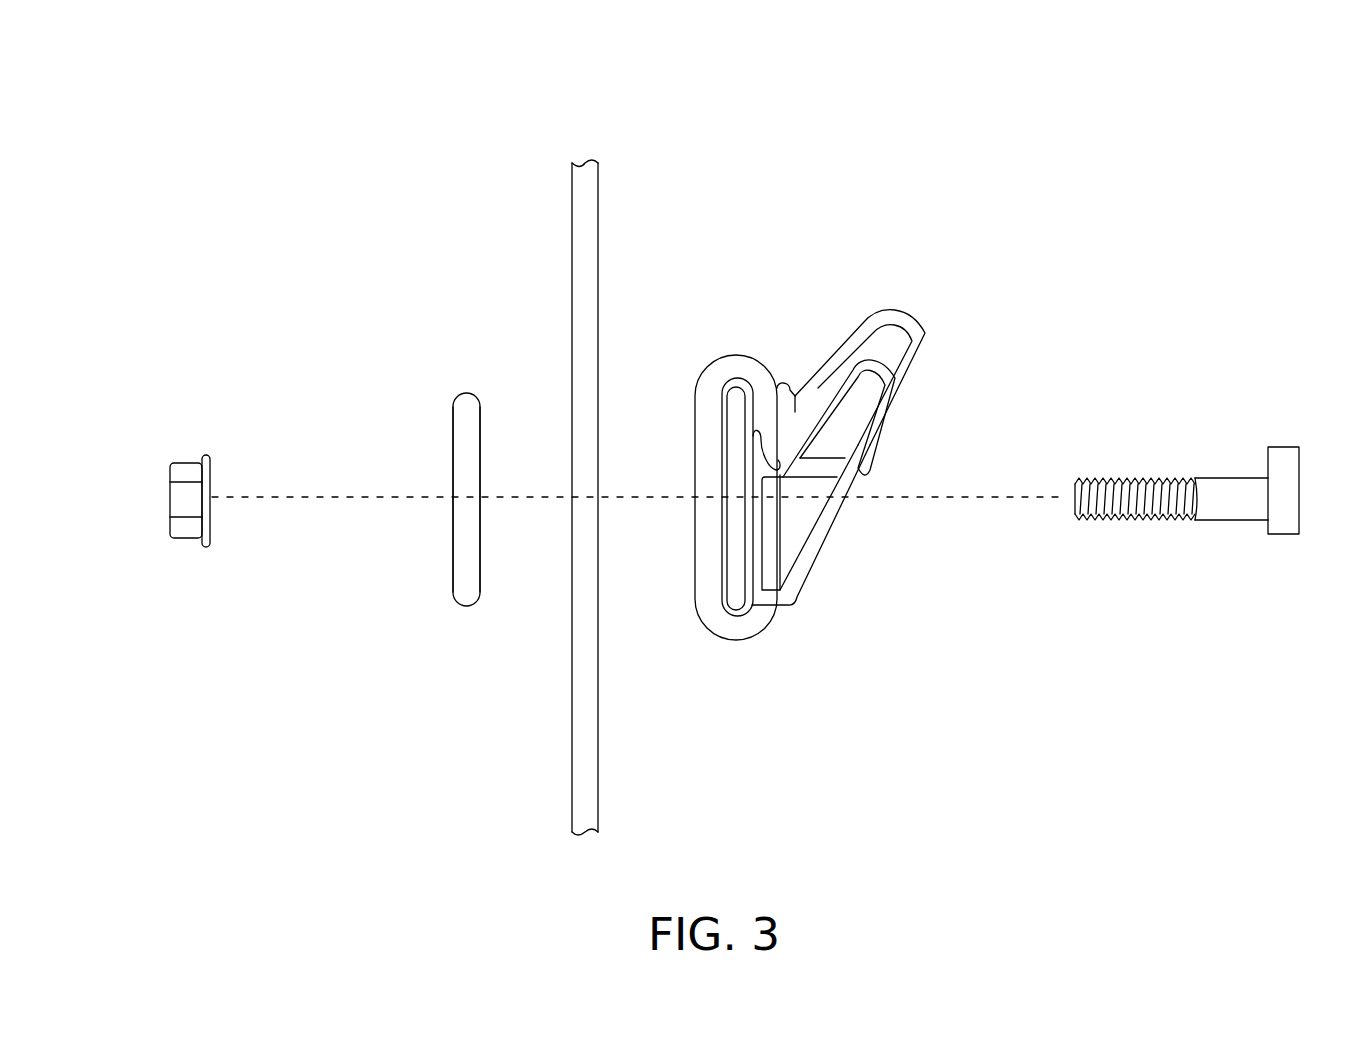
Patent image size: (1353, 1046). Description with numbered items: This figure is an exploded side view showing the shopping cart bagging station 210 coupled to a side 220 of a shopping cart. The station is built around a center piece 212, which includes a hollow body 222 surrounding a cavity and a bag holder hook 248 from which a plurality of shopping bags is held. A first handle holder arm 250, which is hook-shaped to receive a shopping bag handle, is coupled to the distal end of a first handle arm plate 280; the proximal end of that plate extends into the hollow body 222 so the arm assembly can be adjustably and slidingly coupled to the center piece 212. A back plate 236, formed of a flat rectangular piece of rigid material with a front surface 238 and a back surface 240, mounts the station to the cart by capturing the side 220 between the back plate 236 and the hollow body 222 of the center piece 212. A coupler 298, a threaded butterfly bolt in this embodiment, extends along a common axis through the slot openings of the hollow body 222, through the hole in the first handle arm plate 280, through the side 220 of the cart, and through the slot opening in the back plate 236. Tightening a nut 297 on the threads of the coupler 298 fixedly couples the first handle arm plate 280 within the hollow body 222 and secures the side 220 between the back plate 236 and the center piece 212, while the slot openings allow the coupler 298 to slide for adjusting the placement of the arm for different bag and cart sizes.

The shopping cart bagging station 210 is at (747, 128).
The center piece 212 is at (820, 292).
The side 220 is at (582, 188).
The hollow body 222 is at (733, 370).
The back plate 236 is at (462, 412).
The front surface 238 is at (480, 577).
The back surface 240 is at (453, 562).
The bag holder hook 248 is at (918, 322).
The first handle holder arm 250 is at (820, 550).
The first handle arm plate 280 is at (735, 593).
The nut 297 is at (187, 470).
The coupler 298 is at (1283, 462).